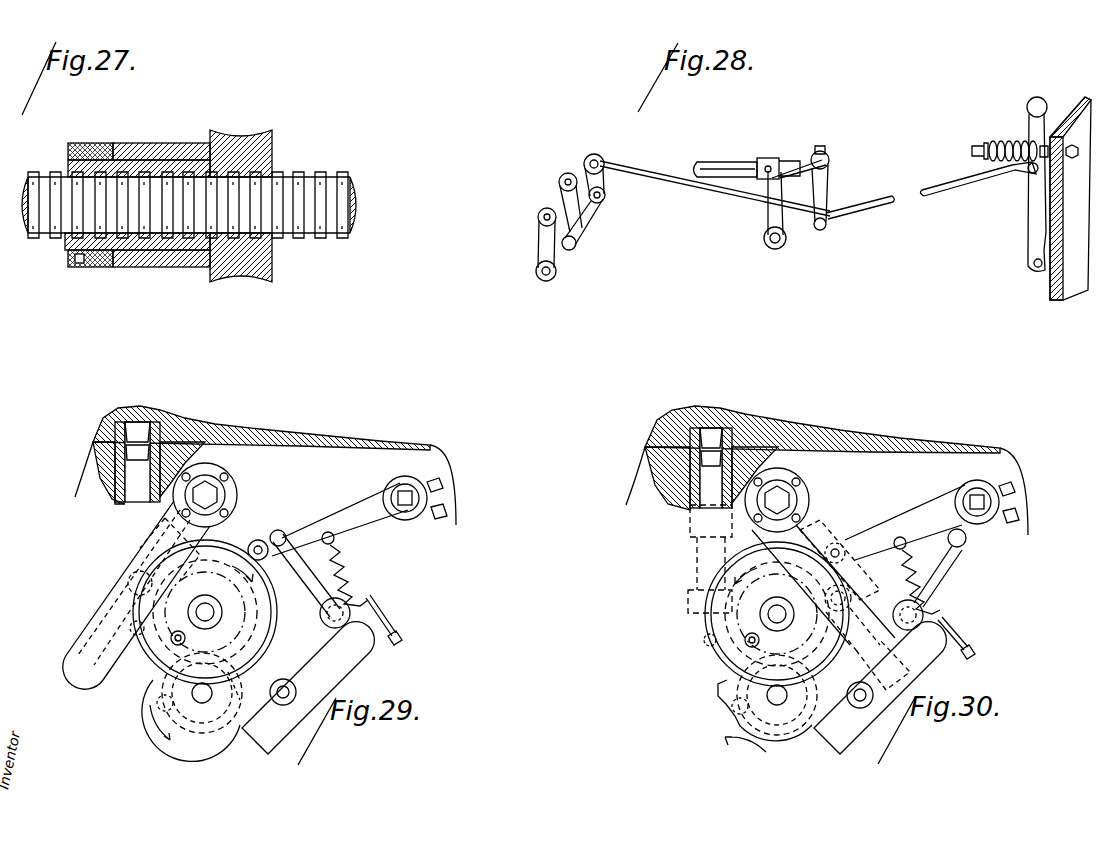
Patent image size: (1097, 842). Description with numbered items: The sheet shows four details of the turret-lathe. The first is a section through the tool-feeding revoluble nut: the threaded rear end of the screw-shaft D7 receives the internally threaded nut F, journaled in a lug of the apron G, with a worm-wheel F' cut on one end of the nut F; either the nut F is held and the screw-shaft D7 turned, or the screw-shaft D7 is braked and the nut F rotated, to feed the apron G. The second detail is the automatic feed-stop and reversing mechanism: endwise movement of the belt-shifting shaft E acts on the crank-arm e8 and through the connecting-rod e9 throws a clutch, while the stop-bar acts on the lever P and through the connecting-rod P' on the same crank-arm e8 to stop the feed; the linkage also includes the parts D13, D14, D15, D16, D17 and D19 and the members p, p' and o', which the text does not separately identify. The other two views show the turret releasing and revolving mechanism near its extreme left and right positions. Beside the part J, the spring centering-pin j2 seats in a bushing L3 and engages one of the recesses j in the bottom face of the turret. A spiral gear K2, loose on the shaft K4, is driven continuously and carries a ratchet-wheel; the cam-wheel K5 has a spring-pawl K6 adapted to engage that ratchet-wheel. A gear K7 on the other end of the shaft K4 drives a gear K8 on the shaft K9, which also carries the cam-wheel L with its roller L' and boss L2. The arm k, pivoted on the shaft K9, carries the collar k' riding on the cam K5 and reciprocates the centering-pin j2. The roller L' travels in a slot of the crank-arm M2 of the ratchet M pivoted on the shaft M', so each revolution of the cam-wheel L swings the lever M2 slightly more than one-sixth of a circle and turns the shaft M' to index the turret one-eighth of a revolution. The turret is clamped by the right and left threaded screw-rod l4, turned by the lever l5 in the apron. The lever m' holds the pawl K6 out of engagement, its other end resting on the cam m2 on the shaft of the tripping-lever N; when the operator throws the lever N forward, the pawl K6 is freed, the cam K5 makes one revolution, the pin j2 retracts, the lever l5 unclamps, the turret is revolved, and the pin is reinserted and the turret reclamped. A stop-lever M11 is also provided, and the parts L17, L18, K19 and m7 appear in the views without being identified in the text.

In FIG. 27, the nut F is at (73, 206).
In FIG. 27, the worm-wheel F' is at (251, 193).
In FIG. 27, the screw-shaft D7 is at (300, 173).
In FIG. 27, the apron G is at (152, 262).
In FIG. 28, the coupling D13 is at (770, 158).
In FIG. 28, the link D14 is at (786, 230).
In FIG. 28, the link D15 is at (832, 178).
In FIG. 28, the pivot link D16 is at (585, 160).
In FIG. 28, the link D17 is at (592, 214).
In FIG. 28, the links D19 is at (562, 186).
In FIG. 28, the belt-shifting shaft E is at (710, 163).
In FIG. 28, the crank-arm e8 is at (766, 193).
In FIG. 28, the connecting-rod e9 is at (697, 193).
In FIG. 28, the connecting-rod P' is at (932, 190).
In FIG. 28, the lever P is at (1021, 179).
In FIG. 28, the spring p is at (999, 134).
In FIG. 28, the collar p' is at (1022, 131).
In FIG. 28, the plate o' is at (1068, 180).
In FIG. 29, the frame J is at (204, 423).
In FIG. 30, the frame J is at (782, 421).
In FIG. 29, the recesses j is at (160, 412).
In FIG. 30, the recesses j is at (730, 410).
In FIG. 29, the spring centering-pin j2 is at (137, 462).
In FIG. 30, the spring centering-pin j2 is at (710, 520).
In FIG. 29, the bushing L3 is at (110, 483).
In FIG. 30, the bushing L3 is at (682, 486).
In FIG. 29, the roller L' is at (270, 545).
In FIG. 30, the roller L' is at (930, 541).
In FIG. 29, the boss L2 is at (150, 548).
In FIG. 30, the boss L2 is at (866, 640).
In FIG. 29, the ratchet M is at (230, 495).
In FIG. 30, the ratchet M is at (820, 556).
In FIG. 29, the shaft M' is at (230, 485).
In FIG. 30, the shaft M' is at (797, 486).
In FIG. 29, the crank-arm M2 is at (95, 598).
In FIG. 30, the crank-arm M2 is at (860, 578).
In FIG. 29, the arm k is at (205, 612).
In FIG. 30, the arm k is at (777, 614).
In FIG. 29, the shaft K9 is at (212, 613).
In FIG. 30, the shaft K9 is at (786, 616).
In FIG. 29, the gear K8 is at (242, 613).
In FIG. 30, the gear K8 is at (806, 640).
In FIG. 29, the collar k' is at (156, 657).
In FIG. 30, the collar k' is at (723, 653).
In FIG. 29, the cam-wheel K5 is at (152, 686).
In FIG. 30, the cam-wheel K5 is at (718, 704).
In FIG. 29, the shaft K4 is at (202, 705).
In FIG. 30, the shaft K4 is at (777, 706).
In FIG. 29, the spring-pawl K6 is at (176, 738).
In FIG. 29, the gear K7 is at (226, 736).
In FIG. 30, the gear K7 is at (795, 735).
In FIG. 29, the pawl K19 is at (236, 682).
In FIG. 30, the pawl K19 is at (762, 722).
In FIG. 30, the spiral gear K2 is at (704, 640).
In FIG. 29, the cam-wheel L is at (308, 688).
In FIG. 30, the cam-wheel L is at (880, 688).
In FIG. 29, the lever m' is at (268, 749).
In FIG. 30, the lever m' is at (946, 662).
In FIG. 29, the stop-lever M11 is at (286, 704).
In FIG. 30, the stop-lever M11 is at (864, 706).
In FIG. 29, the screw-rod l4 is at (258, 540).
In FIG. 30, the screw-rod l4 is at (840, 545).
In FIG. 29, the lever l5 is at (340, 519).
In FIG. 30, the lever l5 is at (905, 522).
In FIG. 29, the roller L17 is at (392, 489).
In FIG. 30, the roller L17 is at (987, 502).
In FIG. 29, the tripping-lever N is at (308, 588).
In FIG. 30, the tripping-lever N is at (950, 552).
In FIG. 29, the spring L18 is at (362, 570).
In FIG. 30, the spring L18 is at (958, 592).
In FIG. 29, the cam m2 is at (375, 606).
In FIG. 30, the cam m2 is at (948, 612).
In FIG. 29, the pin head m7 is at (350, 624).
In FIG. 30, the pin head m7 is at (936, 626).